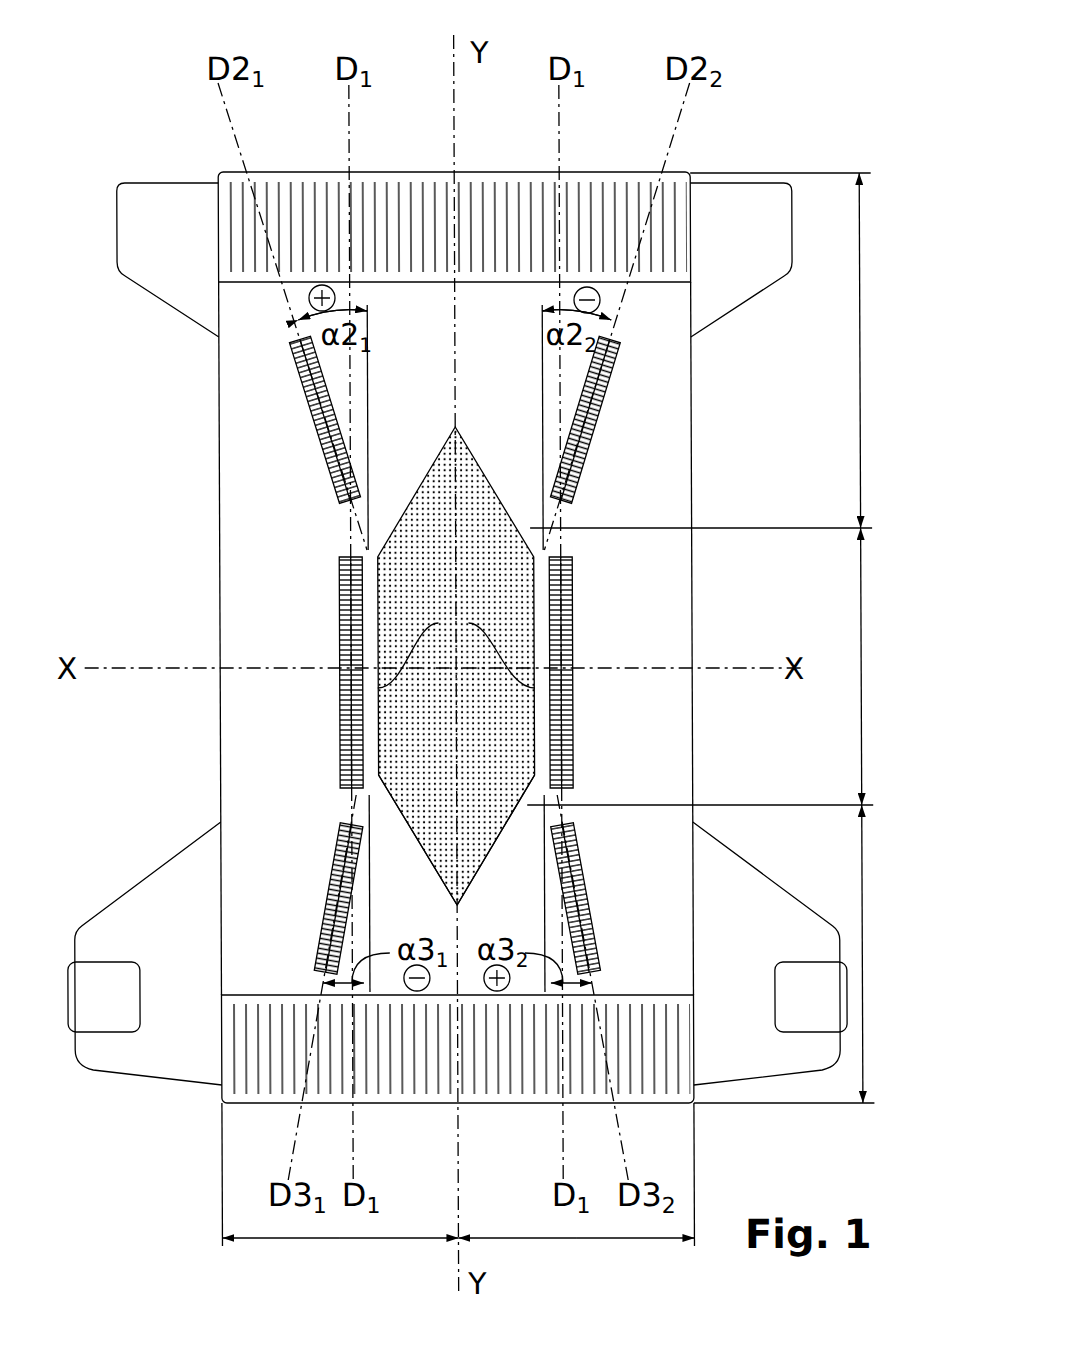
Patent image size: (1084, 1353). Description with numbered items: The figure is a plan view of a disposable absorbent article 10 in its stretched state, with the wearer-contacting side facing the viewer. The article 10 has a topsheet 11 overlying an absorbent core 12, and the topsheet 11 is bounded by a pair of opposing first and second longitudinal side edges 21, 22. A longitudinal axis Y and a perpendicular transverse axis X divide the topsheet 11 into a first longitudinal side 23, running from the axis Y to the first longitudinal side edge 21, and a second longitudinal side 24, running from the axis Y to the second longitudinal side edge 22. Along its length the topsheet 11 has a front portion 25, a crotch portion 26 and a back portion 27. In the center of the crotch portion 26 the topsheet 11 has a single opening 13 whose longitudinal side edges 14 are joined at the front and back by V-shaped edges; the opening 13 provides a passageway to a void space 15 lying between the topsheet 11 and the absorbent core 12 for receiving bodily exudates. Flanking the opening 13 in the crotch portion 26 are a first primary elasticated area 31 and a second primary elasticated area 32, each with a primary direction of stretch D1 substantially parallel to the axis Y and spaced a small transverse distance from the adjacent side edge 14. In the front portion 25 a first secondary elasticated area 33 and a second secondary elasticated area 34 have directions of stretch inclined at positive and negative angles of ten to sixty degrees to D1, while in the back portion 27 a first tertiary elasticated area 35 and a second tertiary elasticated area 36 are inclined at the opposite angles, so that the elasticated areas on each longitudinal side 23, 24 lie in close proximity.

The disposable absorbent article 10 is at (722, 150).
The topsheet 11 is at (257, 379).
The absorbent core 12 is at (424, 802).
The opening 13 is at (510, 828).
The longitudinal side edges of the opening 14 is at (455, 644).
The void space 15 is at (425, 745).
The first longitudinal side edge 21 is at (217, 525).
The second longitudinal side edge 22 is at (690, 488).
The first longitudinal side 23 is at (340, 1189).
The second longitudinal side 24 is at (576, 1189).
The front portion 25 is at (717, 350).
The crotch portion 26 is at (715, 666).
The back portion 27 is at (800, 954).
The first primary elasticated area 31 is at (334, 630).
The second primary elasticated area 32 is at (570, 630).
The first secondary elasticated area 33 is at (306, 402).
The second secondary elasticated area 34 is at (601, 402).
The first tertiary elasticated area 35 is at (323, 891).
The second tertiary elasticated area 36 is at (584, 891).